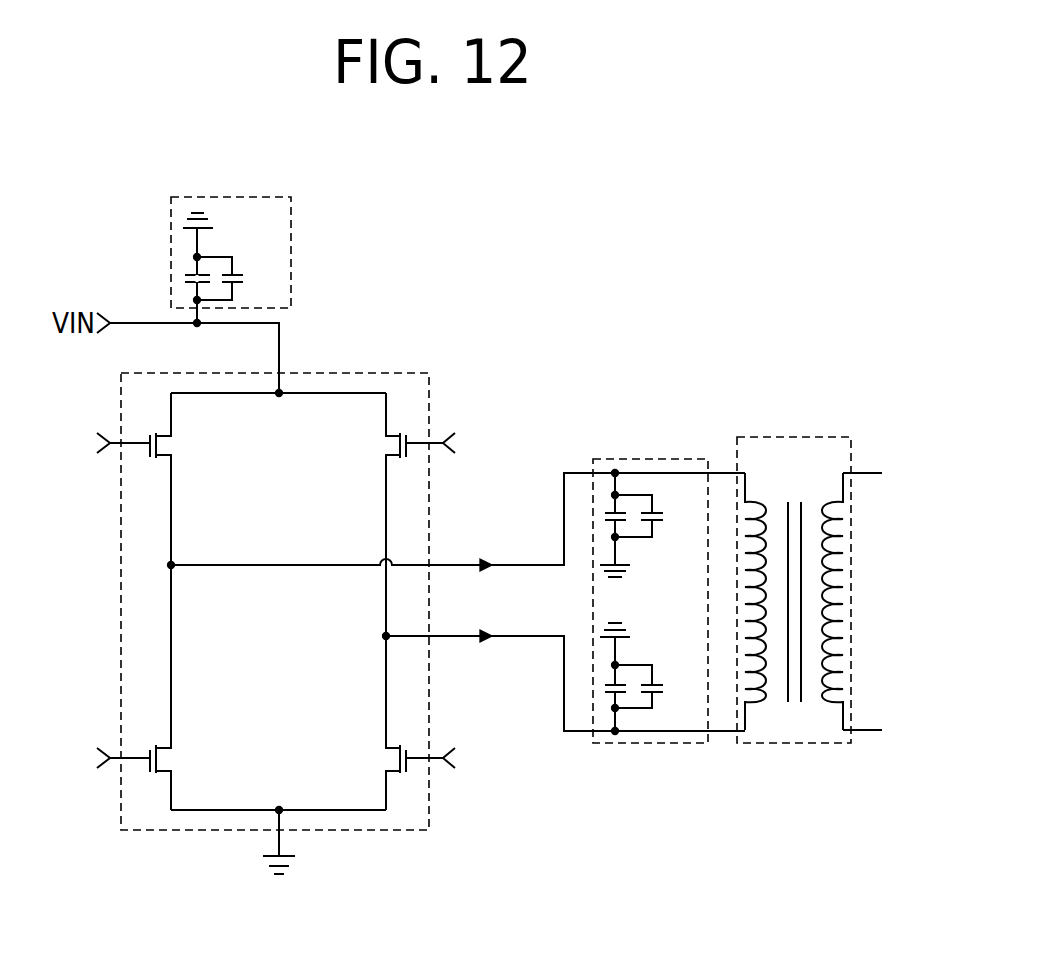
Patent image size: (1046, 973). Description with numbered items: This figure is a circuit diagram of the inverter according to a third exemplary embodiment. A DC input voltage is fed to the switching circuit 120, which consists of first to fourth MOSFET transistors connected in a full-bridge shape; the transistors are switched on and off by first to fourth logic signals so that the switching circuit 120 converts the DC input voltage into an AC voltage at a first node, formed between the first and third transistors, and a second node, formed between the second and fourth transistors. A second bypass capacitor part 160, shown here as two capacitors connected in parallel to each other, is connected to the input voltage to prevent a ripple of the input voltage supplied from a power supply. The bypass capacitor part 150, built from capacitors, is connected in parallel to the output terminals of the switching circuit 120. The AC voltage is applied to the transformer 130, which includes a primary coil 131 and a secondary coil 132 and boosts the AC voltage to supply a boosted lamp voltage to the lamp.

The switching circuit 120 is at (376, 373).
The transformer 130 is at (805, 603).
The primary coil 131 is at (755, 704).
The secondary coil 132 is at (833, 704).
The bypass capacitor part 150 is at (651, 459).
The second bypass capacitor part 160 is at (292, 252).